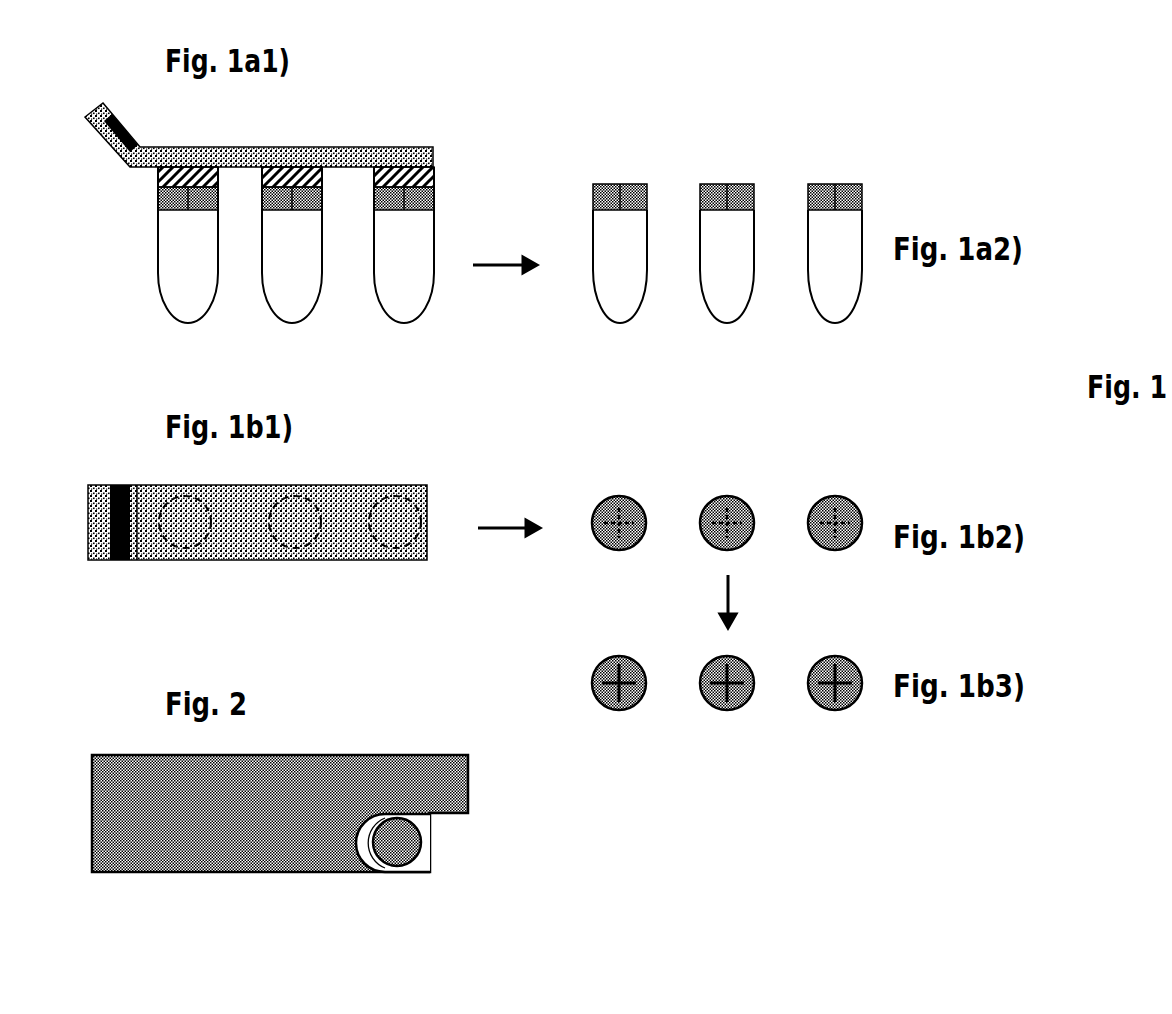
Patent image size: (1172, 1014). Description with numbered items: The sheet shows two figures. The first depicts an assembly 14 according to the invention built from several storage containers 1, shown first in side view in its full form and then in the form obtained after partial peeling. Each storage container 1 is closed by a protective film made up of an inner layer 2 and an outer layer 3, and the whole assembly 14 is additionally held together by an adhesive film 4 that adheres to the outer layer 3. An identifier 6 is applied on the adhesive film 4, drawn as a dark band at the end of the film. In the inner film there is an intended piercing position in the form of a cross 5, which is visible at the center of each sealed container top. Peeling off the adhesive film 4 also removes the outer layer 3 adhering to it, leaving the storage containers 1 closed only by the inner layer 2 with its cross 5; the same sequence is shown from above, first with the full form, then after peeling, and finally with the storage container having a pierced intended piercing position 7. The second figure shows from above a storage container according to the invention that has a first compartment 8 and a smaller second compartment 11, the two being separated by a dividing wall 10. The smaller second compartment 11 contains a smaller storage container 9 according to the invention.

In FIG. 1, the storage container 1 is at (158, 265).
In FIG. 1, the inner layer 2 is at (434, 205).
In FIG. 1, the outer layer 3 is at (434, 177).
In FIG. 1, the adhesive film 4 is at (433, 158).
In FIG. 1, the intended piercing position 5 is at (158, 198).
In FIG. 1, the identifier 6 is at (125, 136).
In FIG. 1, the pierced intended piercing position 7 is at (603, 673).
In FIG. 1, the assembly 14 is at (246, 267).
In FIG. 2, the first compartment 8 is at (410, 763).
In FIG. 2, the smaller storage container 9 is at (408, 850).
In FIG. 2, the dividing wall 10 is at (355, 850).
In FIG. 2, the second compartment 11 is at (367, 843).